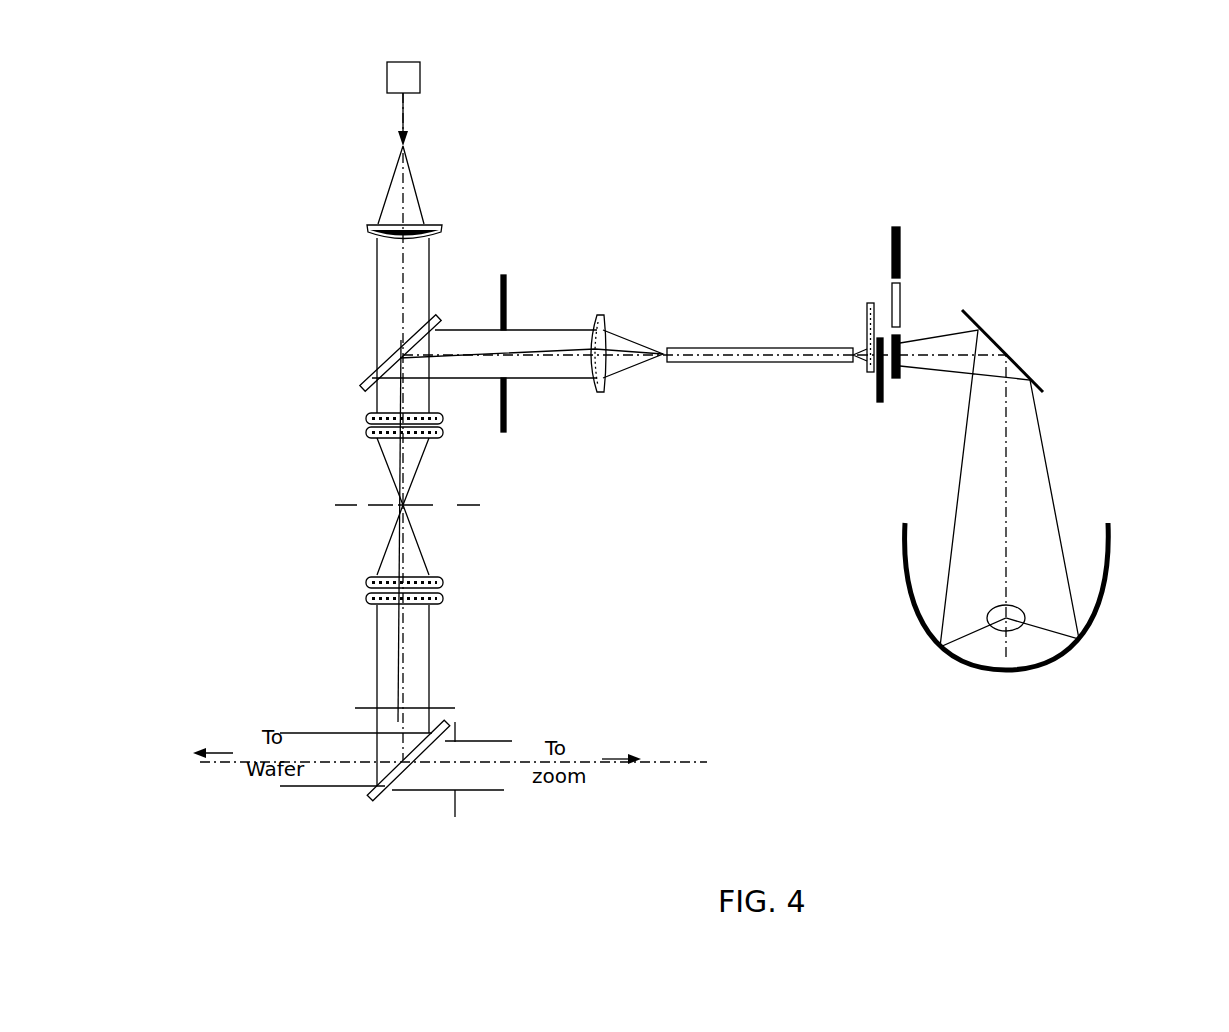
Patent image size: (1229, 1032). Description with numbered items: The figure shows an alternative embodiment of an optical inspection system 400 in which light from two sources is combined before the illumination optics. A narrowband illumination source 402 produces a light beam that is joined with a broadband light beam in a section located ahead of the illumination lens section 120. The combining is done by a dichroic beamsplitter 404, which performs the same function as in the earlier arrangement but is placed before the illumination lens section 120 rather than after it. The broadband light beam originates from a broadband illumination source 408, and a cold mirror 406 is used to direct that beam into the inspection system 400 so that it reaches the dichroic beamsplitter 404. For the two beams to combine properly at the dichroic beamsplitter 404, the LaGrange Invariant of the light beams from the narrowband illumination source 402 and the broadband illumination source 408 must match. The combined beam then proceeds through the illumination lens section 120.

The optical inspection system 400 is at (790, 156).
The narrowband illumination source 402 is at (415, 62).
The dichroic beamsplitter 404 is at (403, 348).
The cold mirror 406 is at (973, 315).
The broadband illumination source 408 is at (1127, 515).
The illumination lens section 120 is at (333, 413).